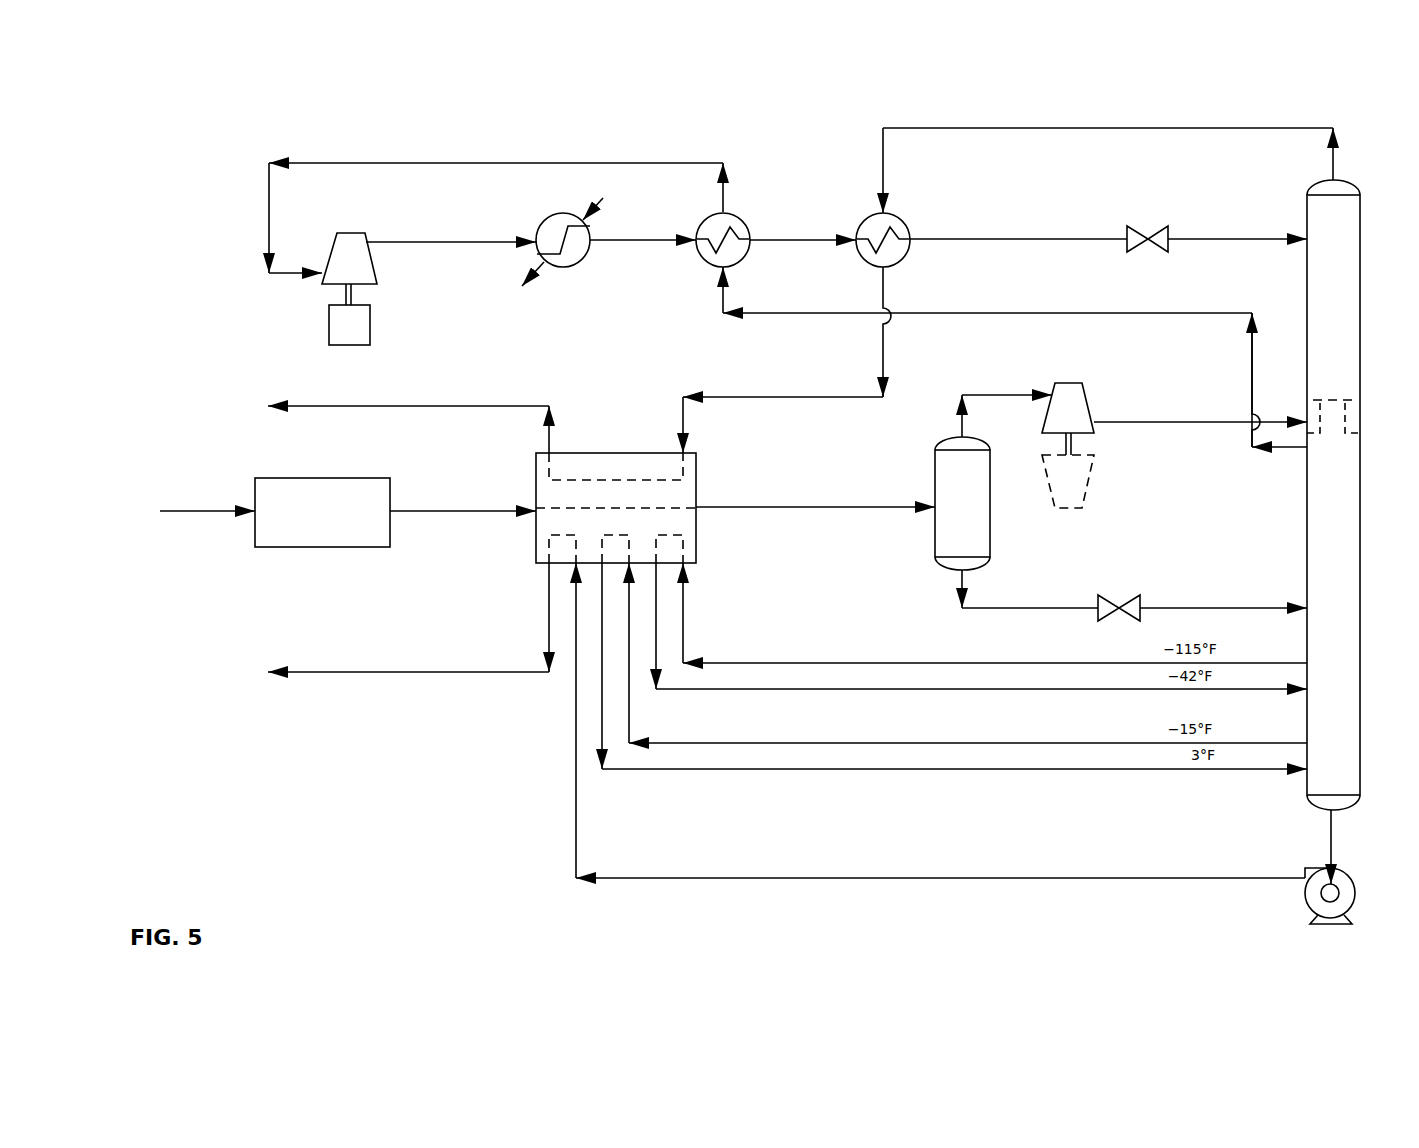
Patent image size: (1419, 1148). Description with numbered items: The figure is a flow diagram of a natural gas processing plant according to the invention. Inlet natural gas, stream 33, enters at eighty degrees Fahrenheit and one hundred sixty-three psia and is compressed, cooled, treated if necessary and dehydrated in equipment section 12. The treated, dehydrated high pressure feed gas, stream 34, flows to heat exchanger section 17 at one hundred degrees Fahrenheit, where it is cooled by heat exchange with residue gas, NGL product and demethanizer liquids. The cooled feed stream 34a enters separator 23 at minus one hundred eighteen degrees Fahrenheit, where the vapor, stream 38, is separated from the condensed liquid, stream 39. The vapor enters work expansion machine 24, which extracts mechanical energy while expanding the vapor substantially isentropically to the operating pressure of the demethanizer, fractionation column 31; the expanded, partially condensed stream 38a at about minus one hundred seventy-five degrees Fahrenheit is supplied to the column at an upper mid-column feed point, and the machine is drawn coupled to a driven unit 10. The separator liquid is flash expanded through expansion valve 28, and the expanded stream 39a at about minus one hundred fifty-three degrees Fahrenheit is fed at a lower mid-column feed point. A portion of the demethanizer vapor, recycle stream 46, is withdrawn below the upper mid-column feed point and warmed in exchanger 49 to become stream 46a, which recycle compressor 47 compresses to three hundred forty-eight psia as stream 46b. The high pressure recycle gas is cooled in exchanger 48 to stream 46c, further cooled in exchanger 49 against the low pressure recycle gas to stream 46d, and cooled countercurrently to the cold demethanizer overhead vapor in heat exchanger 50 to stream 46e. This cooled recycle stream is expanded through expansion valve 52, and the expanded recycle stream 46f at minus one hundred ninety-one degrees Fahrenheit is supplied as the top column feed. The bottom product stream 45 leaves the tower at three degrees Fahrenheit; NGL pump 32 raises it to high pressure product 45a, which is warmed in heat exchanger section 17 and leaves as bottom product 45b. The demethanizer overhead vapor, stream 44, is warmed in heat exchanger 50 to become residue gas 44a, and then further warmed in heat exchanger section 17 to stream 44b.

The expander (work expansion machine) 10 is at (1089, 482).
The equipment section 12 is at (325, 548).
The heat exchanger section 17 is at (696, 543).
The separator 23 is at (990, 531).
The work expansion machine 24 is at (1083, 385).
The expansion valve 28 is at (1095, 618).
The fractionation column 31 is at (1306, 582).
The NGL pump 32 is at (1309, 907).
The inlet natural gas stream 33 is at (192, 514).
The treated, dehydrated high pressure feed gas stream 34 is at (472, 514).
The cooled feed stream 34a is at (827, 510).
The separator vapor stream 38 is at (1010, 398).
The expanded partially condensed stream 38a is at (1176, 425).
The separator liquid stream 39 is at (1018, 611).
The expanded liquid stream 39a is at (1257, 611).
The demethanizer overhead vapor stream 44 is at (1176, 131).
The warmed residue gas stream 44a is at (787, 400).
The residue gas stream 44b is at (434, 409).
The bottom product stream 45 is at (1331, 824).
The high pressure product stream 45a is at (1202, 881).
The bottom product stream 45b is at (434, 675).
The recycle stream 46 is at (1176, 316).
The warmed recycle gas stream 46a is at (512, 166).
The compressed recycle gas stream 46b is at (459, 245).
The cooled high pressure recycle gas stream 46c is at (659, 243).
The further cooled recycle gas stream 46d is at (814, 243).
The cooled recycle stream 46e is at (1072, 242).
The expanded recycle stream 46f is at (1230, 242).
The recycle compressor 47 is at (336, 239).
The exchanger 48 is at (586, 260).
The exchanger 49 is at (744, 258).
The heat exchanger 50 is at (904, 258).
The expansion valve 52 is at (1128, 227).